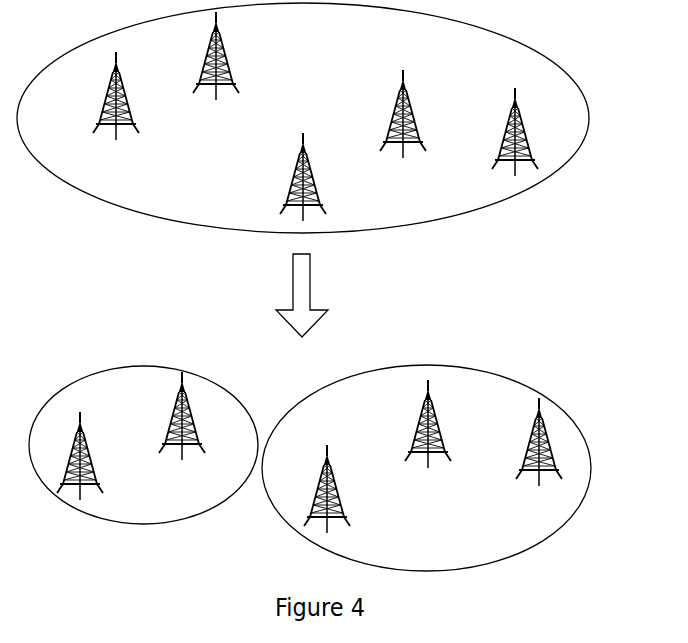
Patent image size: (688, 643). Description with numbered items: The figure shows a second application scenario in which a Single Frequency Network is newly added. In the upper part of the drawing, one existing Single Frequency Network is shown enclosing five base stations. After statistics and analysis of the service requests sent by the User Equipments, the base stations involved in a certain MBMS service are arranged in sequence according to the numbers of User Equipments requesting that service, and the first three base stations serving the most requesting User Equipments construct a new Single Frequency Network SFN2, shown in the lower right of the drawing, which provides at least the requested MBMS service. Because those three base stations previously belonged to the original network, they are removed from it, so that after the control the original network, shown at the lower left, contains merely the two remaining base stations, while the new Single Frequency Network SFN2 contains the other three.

The Single Frequency Network SFN2 is at (498, 382).